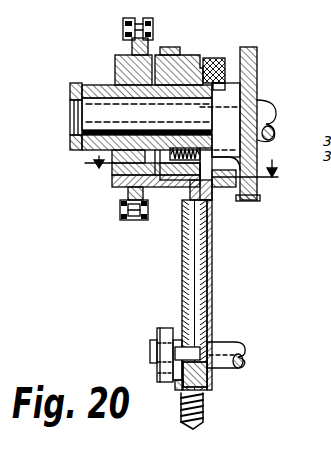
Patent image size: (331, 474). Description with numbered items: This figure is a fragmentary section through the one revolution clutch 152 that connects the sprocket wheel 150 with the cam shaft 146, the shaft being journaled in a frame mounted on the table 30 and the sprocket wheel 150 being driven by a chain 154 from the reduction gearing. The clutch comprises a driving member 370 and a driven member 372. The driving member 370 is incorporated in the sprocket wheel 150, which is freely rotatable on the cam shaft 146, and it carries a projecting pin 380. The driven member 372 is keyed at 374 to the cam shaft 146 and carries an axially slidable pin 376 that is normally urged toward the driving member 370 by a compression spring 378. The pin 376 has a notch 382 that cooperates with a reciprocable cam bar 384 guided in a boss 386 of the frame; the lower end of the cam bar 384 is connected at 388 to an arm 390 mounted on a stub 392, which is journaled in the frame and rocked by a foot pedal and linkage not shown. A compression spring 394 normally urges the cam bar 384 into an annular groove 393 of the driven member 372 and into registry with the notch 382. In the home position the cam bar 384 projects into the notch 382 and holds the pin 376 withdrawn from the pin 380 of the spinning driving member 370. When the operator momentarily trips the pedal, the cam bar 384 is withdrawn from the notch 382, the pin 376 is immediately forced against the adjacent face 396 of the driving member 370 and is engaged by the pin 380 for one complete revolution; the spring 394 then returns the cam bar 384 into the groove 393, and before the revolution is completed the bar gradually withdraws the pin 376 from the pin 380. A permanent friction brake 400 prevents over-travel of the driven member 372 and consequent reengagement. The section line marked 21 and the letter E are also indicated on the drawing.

The table 30 is at (300, 0).
The cam shaft 146 is at (263, 112).
The sprocket wheel 150 is at (133, 42).
The one revolution clutch 152 is at (190, 56).
The chain 154 is at (131, 15).
The driving member 370 is at (130, 70).
The driven member 372 is at (276, 38).
The key 374 is at (152, 117).
The axially slidable pin 376 is at (213, 178).
The compression spring 378 is at (211, 134).
The projecting pin 380 is at (113, 184).
The notch 382 is at (205, 190).
The cam bar 384 is at (196, 270).
The boss 386 is at (213, 298).
The connection 388 is at (190, 335).
The arm 390 is at (160, 375).
The stub 392 is at (225, 343).
The annular groove 393 is at (210, 50).
The compression spring 394 is at (204, 408).
The face 396 is at (158, 52).
The permanent friction brake 400 is at (166, 197).
The section line 21 is at (182, 169).
The detail E is at (108, 196).